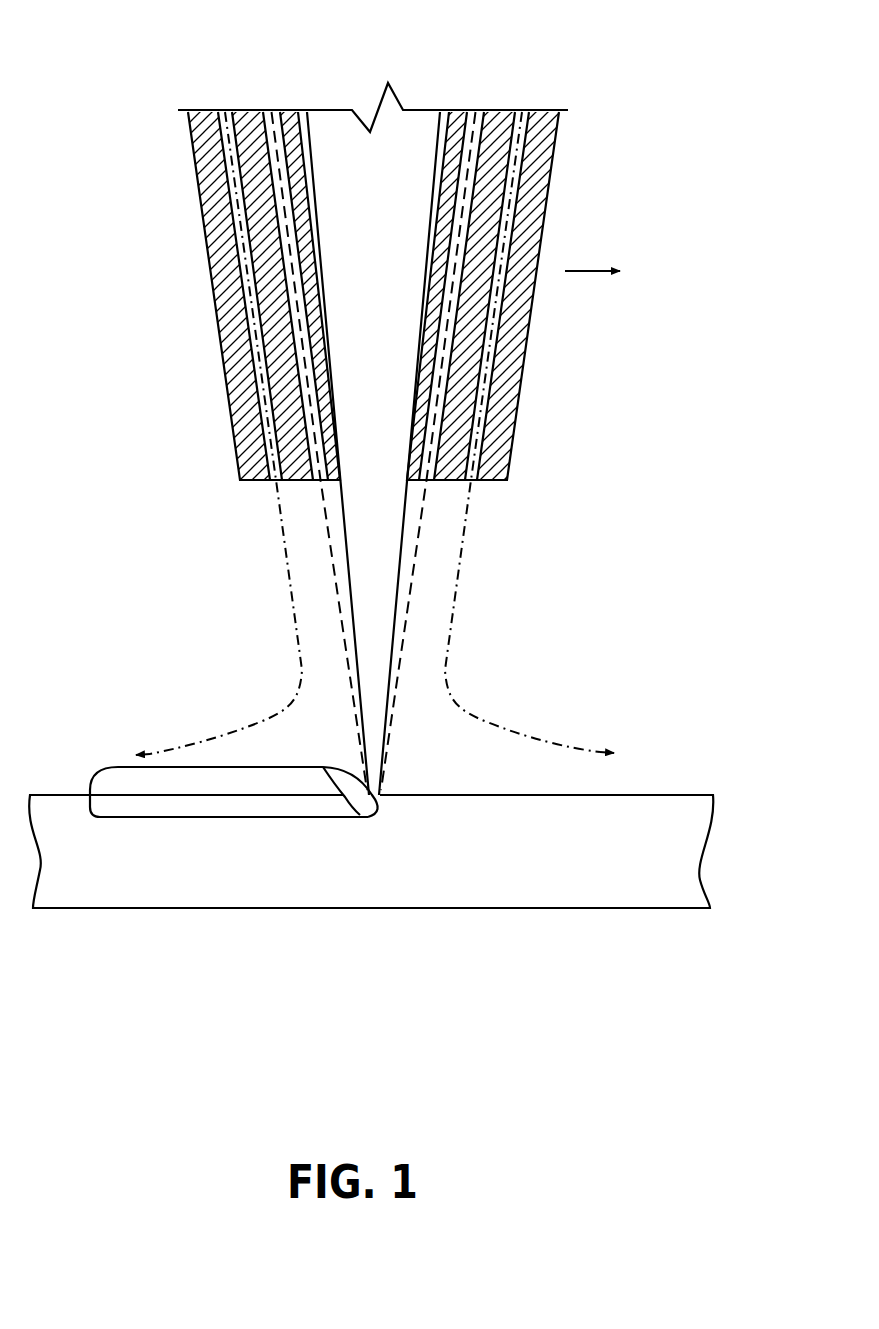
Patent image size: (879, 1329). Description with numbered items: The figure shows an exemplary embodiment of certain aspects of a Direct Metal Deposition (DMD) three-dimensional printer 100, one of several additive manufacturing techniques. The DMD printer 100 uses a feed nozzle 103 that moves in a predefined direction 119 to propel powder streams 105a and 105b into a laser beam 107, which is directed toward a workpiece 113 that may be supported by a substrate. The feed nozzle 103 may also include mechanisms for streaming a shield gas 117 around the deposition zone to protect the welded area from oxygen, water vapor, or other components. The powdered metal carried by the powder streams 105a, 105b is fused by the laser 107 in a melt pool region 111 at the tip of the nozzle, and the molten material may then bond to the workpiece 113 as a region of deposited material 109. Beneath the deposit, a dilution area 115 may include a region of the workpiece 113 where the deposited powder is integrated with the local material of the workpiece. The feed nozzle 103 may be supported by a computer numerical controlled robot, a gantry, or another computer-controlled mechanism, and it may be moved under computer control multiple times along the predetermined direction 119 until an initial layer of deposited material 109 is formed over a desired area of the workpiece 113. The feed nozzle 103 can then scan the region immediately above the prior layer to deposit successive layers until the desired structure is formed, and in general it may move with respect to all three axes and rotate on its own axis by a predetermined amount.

The DMD 3-D printer 100 is at (140, 50).
The feed nozzle 103 is at (210, 275).
The powder stream 105a is at (420, 535).
The powder stream 105b is at (330, 537).
The laser beam 107 is at (377, 597).
The deposited material 109 is at (273, 782).
The melt pool region 111 is at (370, 805).
The workpiece 113 is at (640, 892).
The dilution area 115 is at (162, 805).
The shield gas 117 is at (125, 763).
The predefined direction 119 is at (675, 282).